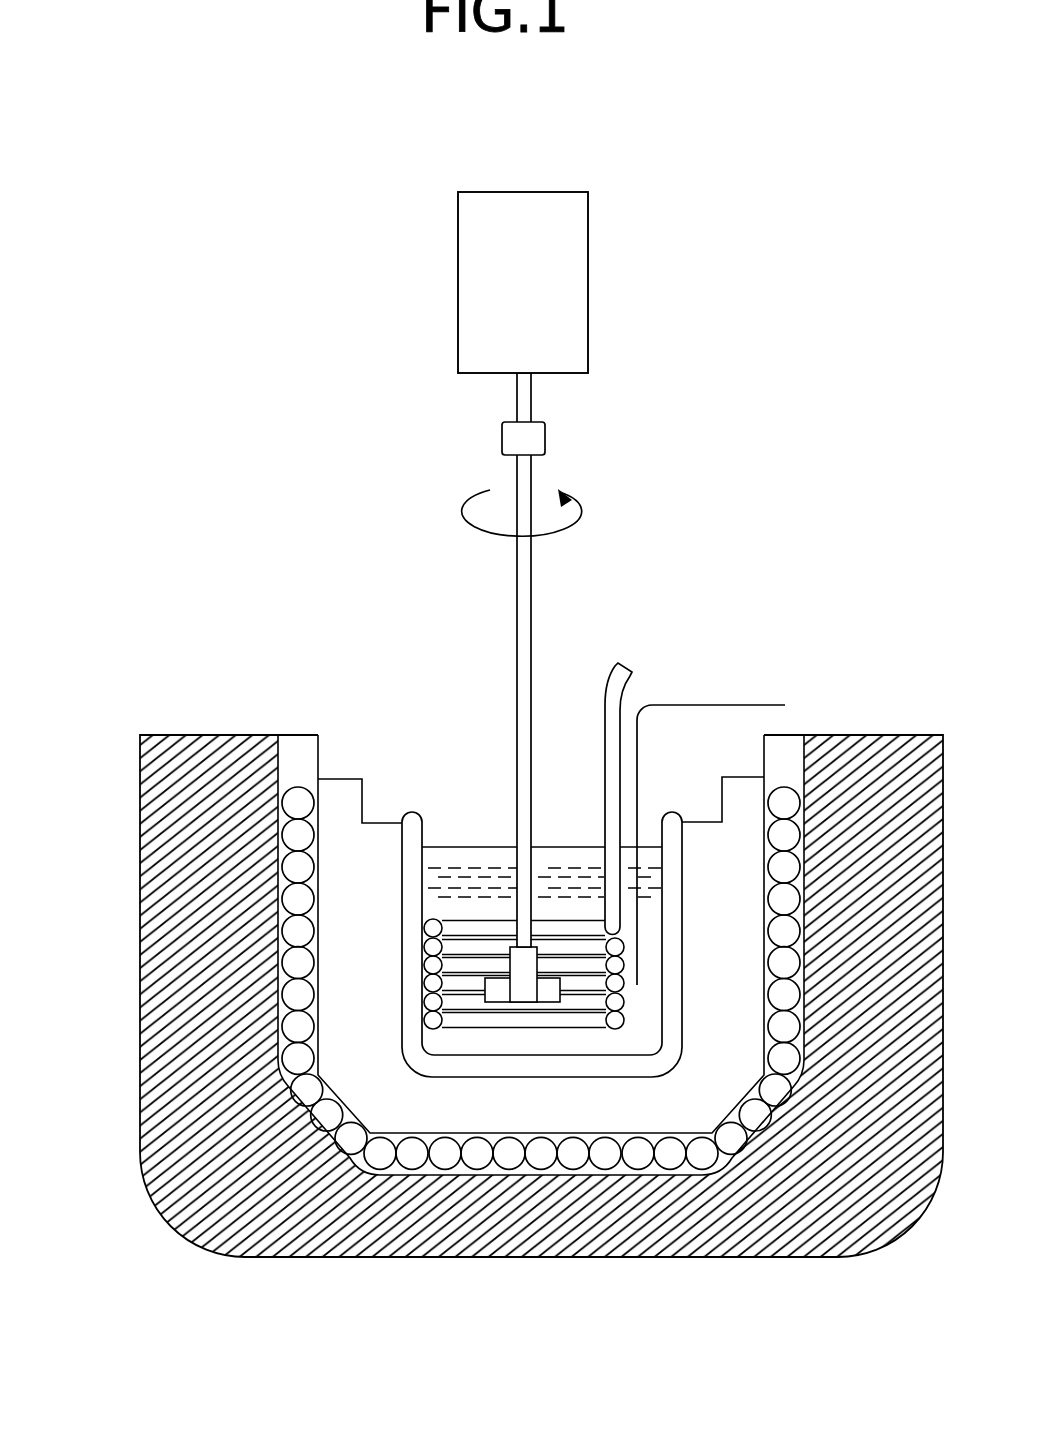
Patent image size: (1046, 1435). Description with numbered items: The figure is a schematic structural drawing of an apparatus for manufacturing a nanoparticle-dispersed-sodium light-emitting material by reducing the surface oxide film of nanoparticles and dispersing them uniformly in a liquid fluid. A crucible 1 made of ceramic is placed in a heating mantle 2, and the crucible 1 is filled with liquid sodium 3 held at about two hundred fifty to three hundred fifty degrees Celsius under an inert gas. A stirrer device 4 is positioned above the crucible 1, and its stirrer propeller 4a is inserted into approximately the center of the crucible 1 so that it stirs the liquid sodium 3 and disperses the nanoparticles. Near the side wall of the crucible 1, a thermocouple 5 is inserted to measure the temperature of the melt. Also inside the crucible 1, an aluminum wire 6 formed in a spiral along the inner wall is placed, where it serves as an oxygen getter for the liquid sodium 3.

The crucible 1 is at (413, 822).
The heating mantle 2 is at (163, 977).
The liquid sodium 3 is at (478, 855).
The stirrer device 4 is at (552, 192).
The stirrer propeller 4a is at (524, 995).
The thermocouple 5 is at (758, 705).
The aluminum wire 6 is at (632, 672).